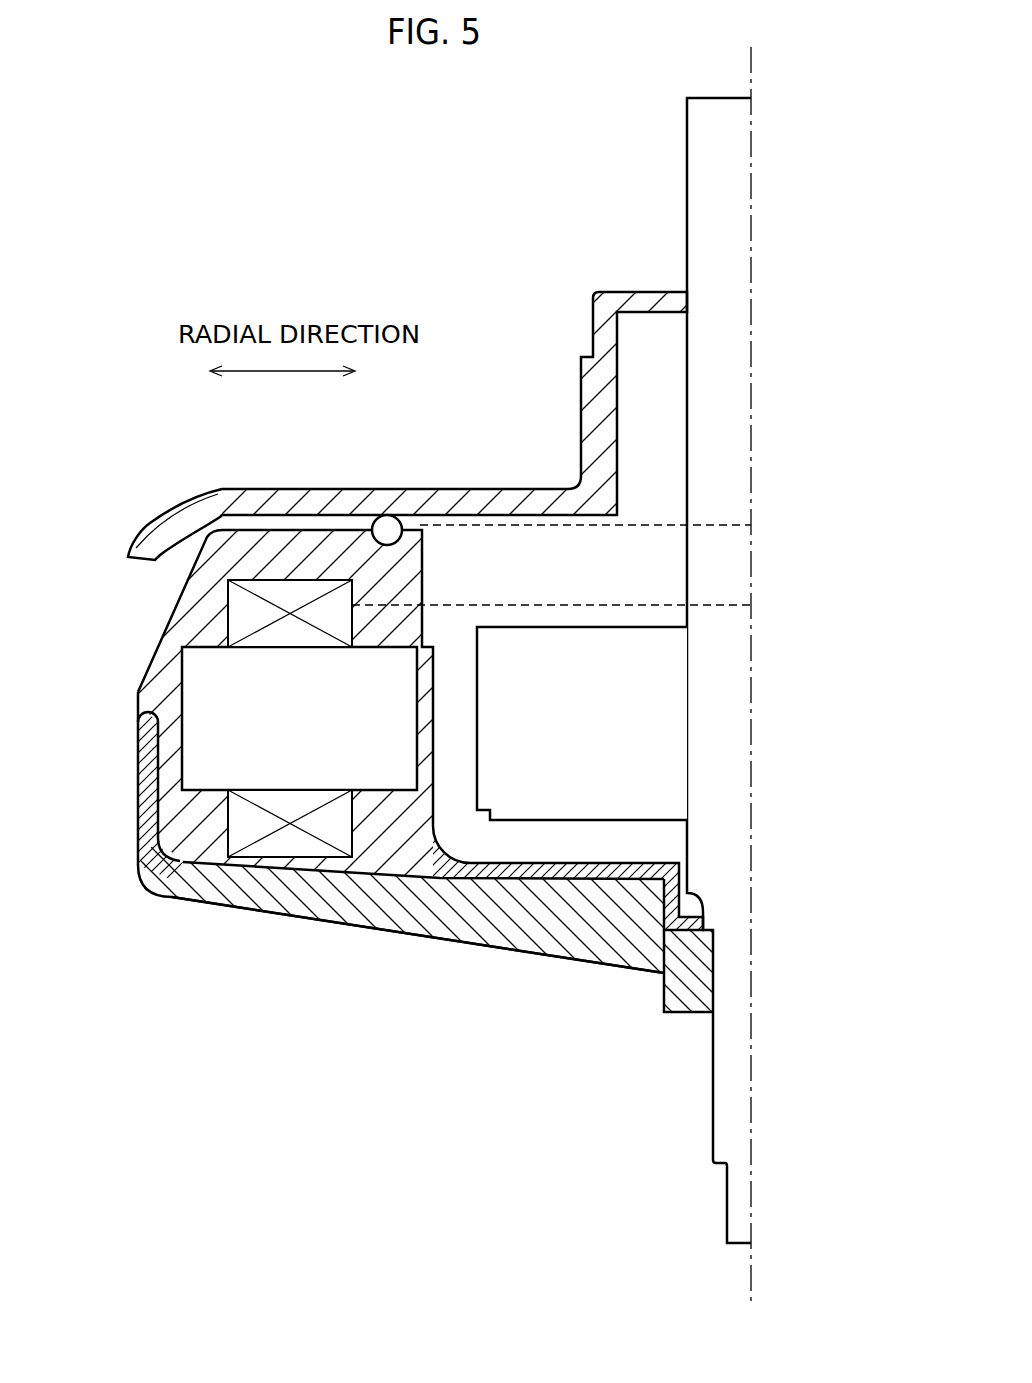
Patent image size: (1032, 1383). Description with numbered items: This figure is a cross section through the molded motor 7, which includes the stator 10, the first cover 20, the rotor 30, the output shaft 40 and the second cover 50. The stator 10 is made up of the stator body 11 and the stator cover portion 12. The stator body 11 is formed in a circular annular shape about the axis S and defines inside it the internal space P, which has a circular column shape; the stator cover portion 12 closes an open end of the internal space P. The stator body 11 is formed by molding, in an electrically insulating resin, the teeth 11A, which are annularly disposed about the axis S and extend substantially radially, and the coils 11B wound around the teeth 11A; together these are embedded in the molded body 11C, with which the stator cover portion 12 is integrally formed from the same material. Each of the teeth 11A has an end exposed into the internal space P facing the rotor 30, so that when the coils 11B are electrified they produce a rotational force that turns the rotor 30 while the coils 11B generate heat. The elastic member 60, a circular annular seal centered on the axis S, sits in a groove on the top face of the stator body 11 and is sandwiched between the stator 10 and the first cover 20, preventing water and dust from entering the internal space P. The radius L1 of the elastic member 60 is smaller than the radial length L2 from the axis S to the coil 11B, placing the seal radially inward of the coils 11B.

The molded motor 7 is at (846, 92).
The stator 10 is at (138, 628).
The stator body 11 is at (395, 988).
The teeth 11A is at (377, 755).
The coils 11B is at (283, 633).
The molded body 11C is at (200, 855).
The stator cover portion 12 is at (463, 870).
The first cover 20 is at (597, 402).
The rotor 30 is at (655, 737).
The output shaft 40 is at (704, 148).
The second cover 50 is at (530, 930).
The elastic member 60 is at (387, 526).
The axis S is at (750, 679).
The internal space P is at (617, 848).
The radius of elastic member L1 is at (705, 525).
The length between axis and coil L2 is at (705, 605).